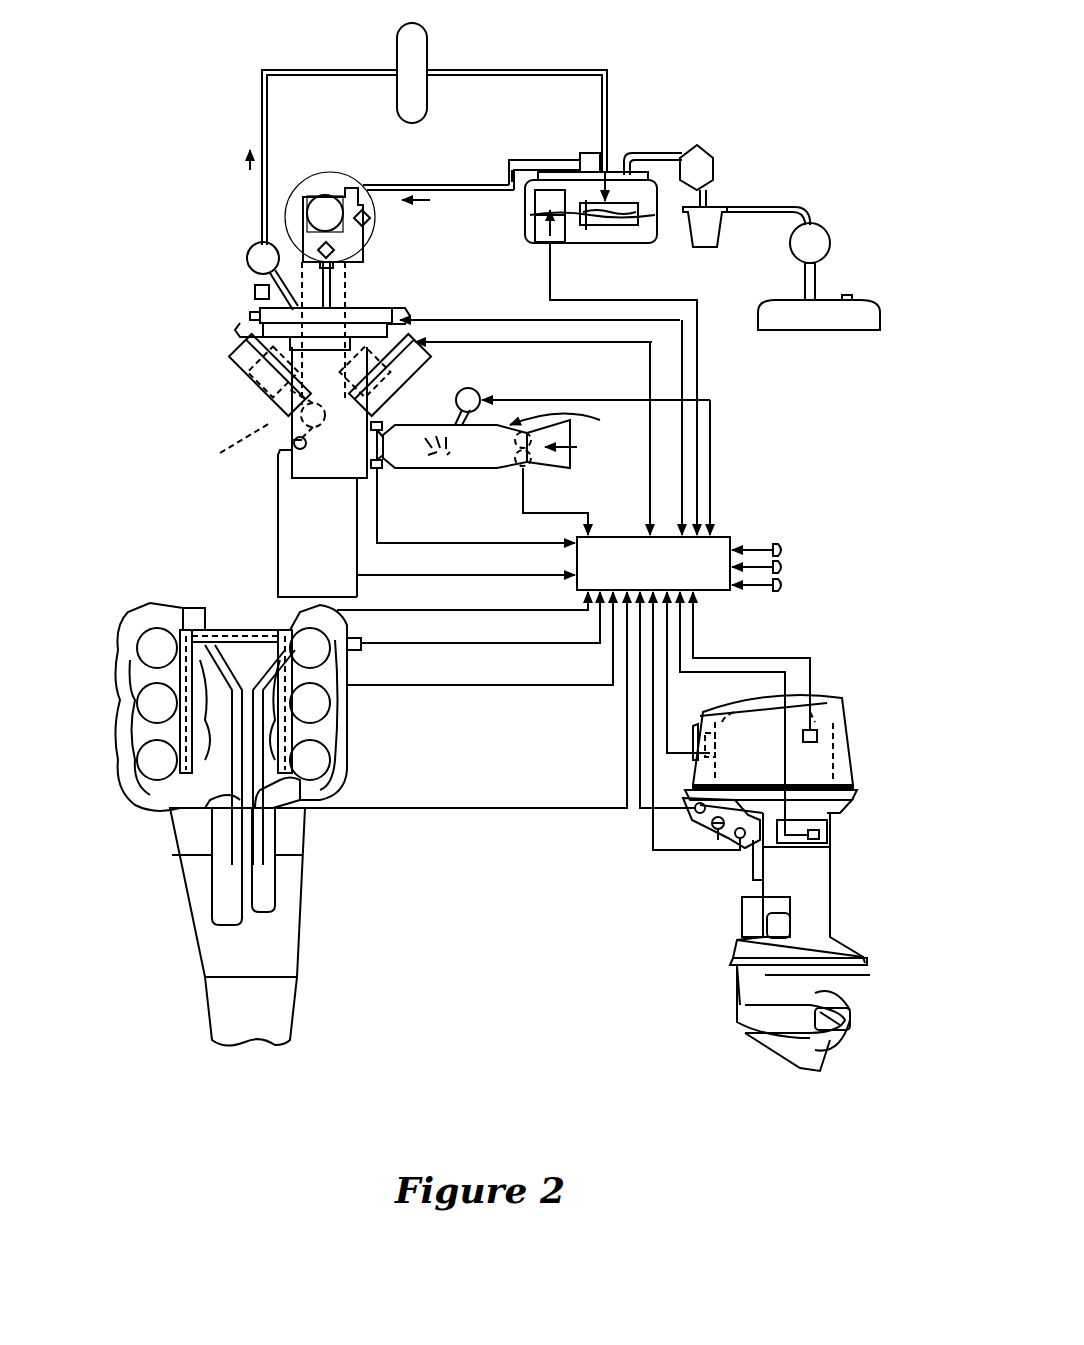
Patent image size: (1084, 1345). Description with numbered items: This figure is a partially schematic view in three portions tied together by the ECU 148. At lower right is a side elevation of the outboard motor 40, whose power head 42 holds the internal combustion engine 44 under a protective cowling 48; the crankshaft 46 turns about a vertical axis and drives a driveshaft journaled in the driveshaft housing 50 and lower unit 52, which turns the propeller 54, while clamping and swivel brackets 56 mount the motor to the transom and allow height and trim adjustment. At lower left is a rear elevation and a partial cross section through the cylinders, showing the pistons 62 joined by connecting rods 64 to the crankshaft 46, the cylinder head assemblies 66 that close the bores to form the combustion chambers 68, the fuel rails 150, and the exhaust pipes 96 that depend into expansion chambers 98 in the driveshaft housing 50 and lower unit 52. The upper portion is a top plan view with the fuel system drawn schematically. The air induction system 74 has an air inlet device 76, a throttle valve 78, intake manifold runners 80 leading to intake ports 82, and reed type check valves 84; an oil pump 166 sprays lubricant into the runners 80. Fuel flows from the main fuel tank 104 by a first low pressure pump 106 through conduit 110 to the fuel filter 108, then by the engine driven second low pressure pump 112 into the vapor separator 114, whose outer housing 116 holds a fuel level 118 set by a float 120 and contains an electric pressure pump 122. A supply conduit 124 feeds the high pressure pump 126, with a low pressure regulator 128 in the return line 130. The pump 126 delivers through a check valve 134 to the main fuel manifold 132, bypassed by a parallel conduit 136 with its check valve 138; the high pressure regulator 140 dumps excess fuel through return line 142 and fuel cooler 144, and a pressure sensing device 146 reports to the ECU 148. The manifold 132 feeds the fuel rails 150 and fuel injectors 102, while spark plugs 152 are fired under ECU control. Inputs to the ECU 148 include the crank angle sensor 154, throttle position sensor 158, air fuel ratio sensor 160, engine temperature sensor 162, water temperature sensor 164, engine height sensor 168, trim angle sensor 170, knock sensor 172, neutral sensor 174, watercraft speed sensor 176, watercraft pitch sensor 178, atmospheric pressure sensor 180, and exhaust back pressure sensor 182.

The outboard motor 40 is at (845, 690).
The power head 42 is at (895, 770).
The internal combustion engine 44 is at (345, 625).
The crankshaft 46 is at (322, 480).
The protective cowling 48 is at (853, 785).
The driveshaft housing 50 is at (300, 960).
The lower unit 52 is at (300, 1010).
The propeller 54 is at (828, 1060).
The clamping and swivel brackets 56 is at (742, 850).
The pistons 62 is at (262, 400).
The connecting rods 64 is at (395, 412).
The cylinder head assemblies 66 is at (235, 380).
The combustion chambers 68 is at (278, 495).
The air induction system 74 is at (565, 430).
The air inlet device 76 is at (480, 468).
The throttle valve 78 is at (515, 466).
The intake manifold runners 80 is at (455, 468).
The intake ports 82 is at (382, 495).
The reed type check valves 84 is at (380, 468).
The exhaust pipes 96 is at (305, 855).
The expansion chambers 98 is at (212, 895).
The fuel injectors 102 is at (250, 325).
The main fuel tank 104 is at (805, 330).
The first low pressure pump 106 is at (825, 230).
The fuel filter 108 is at (708, 247).
The conduit 110 is at (778, 207).
The second low pressure fuel pump 112 is at (713, 160).
The vapor separator 114 is at (653, 245).
The outer housing 116 is at (585, 250).
The fuel level 118 is at (650, 160).
The float 120 is at (612, 160).
The electrically driven pressure pump 122 is at (528, 245).
The supply conduit 124 is at (418, 185).
The high pressure pump 126 is at (320, 208).
The low pressure regulator 128 is at (588, 152).
The return line 130 is at (540, 160).
The main fuel manifold 132 is at (300, 265).
The check valve 134 is at (302, 225).
The parallel conduit 136 is at (365, 240).
The check valve 138 is at (372, 218).
The high pressure regulator 140 is at (247, 255).
The return line 142 is at (565, 70).
The fuel cooler 144 is at (427, 42).
The pressure sensing device 146 is at (255, 292).
The ECU 148 is at (623, 537).
The fuel rails 150 is at (262, 312).
The spark plugs 152 is at (240, 340).
The crank angle sensor 154 is at (355, 575).
The throttle position sensor 158 is at (345, 705).
The air fuel ratio sensor 160 is at (365, 643).
The engine temperature sensor 162 is at (350, 680).
The water temperature sensor 164 is at (817, 736).
The oil pump 166 is at (476, 394).
The engine height sensor 168 is at (705, 830).
The trim angle sensor 170 is at (737, 905).
The knock sensor 172 is at (720, 674).
The neutral sensor 174 is at (830, 835).
The watercraft speed sensor 176 is at (783, 548).
The watercraft pitch sensor 178 is at (783, 567).
The atmospheric pressure sensor 180 is at (783, 587).
The exhaust back pressure sensor 182 is at (300, 820).